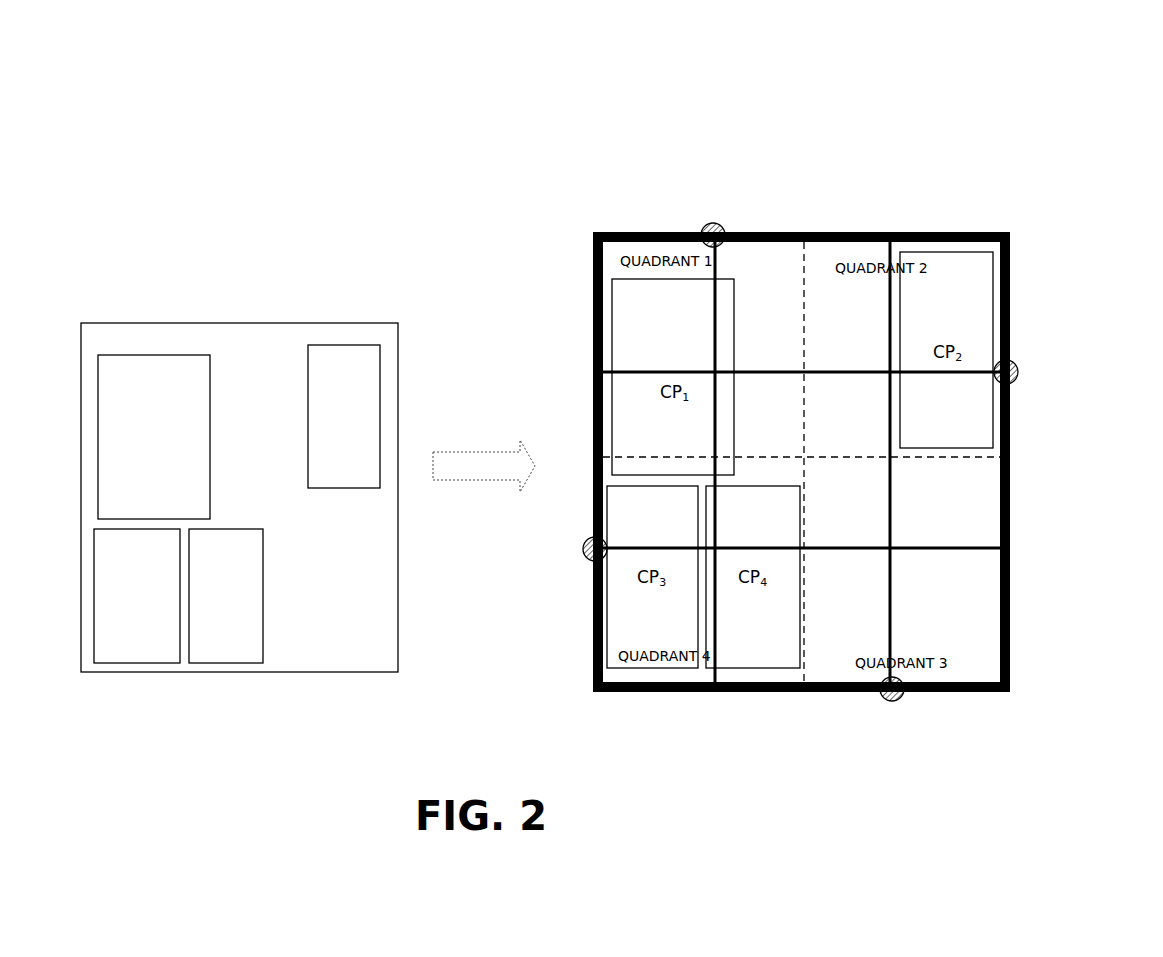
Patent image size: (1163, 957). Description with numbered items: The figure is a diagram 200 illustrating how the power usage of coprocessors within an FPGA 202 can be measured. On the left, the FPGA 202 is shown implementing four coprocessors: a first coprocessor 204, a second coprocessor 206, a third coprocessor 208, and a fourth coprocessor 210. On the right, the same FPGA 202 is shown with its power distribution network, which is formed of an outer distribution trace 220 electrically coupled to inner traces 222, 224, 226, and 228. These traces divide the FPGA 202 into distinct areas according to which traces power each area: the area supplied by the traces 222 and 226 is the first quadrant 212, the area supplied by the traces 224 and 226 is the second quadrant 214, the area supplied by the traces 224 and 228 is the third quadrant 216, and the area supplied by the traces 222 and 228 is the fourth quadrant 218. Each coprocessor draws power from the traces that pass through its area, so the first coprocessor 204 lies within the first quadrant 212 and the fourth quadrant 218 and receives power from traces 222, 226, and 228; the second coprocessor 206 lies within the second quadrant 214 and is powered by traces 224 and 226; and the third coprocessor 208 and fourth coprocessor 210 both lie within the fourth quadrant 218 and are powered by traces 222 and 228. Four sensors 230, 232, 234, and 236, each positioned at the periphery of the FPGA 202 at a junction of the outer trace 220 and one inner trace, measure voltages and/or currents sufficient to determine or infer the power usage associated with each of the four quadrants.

The diagram 200 is at (1022, 98).
The FPGA 202 is at (190, 320).
The first coprocessor CP1 204 is at (215, 403).
The second coprocessor CP2 206 is at (352, 338).
The third coprocessor CP3 208 is at (150, 665).
The fourth coprocessor CP4 210 is at (235, 522).
The quadrant 1 212 is at (600, 250).
The quadrant 2 214 is at (978, 252).
The quadrant 3 216 is at (956, 672).
The quadrant 4 218 is at (670, 670).
The outer distribution trace 220 is at (855, 232).
The inner trace 222 is at (717, 455).
The inner trace 224 is at (885, 620).
The inner trace 226 is at (820, 366).
The inner trace 228 is at (918, 540).
The sensor 230 is at (716, 220).
The sensor 232 is at (890, 706).
The sensor 234 is at (1022, 365).
The sensor 236 is at (578, 548).